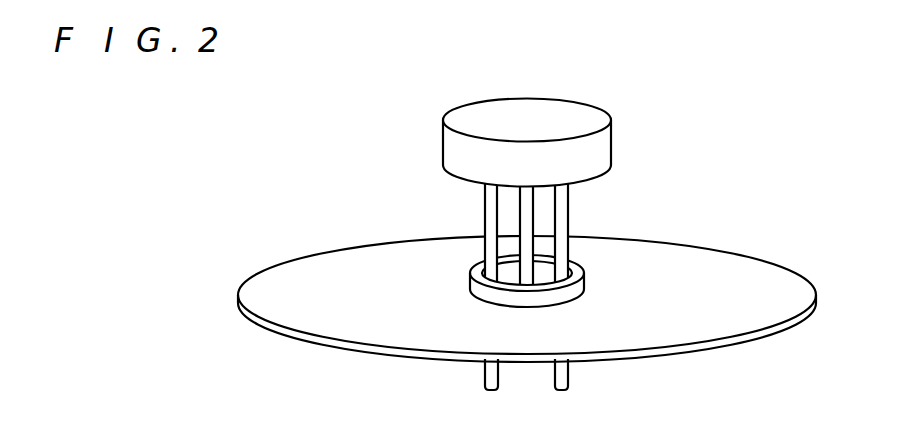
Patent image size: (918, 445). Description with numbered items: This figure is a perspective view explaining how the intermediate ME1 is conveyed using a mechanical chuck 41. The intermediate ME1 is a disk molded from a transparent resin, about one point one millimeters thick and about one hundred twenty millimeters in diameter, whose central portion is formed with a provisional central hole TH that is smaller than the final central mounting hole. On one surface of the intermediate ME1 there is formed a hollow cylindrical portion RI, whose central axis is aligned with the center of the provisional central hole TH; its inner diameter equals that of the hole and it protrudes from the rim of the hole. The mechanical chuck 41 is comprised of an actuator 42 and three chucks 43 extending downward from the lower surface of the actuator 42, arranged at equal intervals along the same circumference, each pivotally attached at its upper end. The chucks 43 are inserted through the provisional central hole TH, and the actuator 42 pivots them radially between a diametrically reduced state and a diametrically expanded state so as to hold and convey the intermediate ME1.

The mechanical chuck 41 is at (561, 130).
The actuator 42 is at (520, 109).
The chucks 43 is at (490, 211).
The provisional central hole TH is at (510, 277).
The hollow cylindrical portion RI is at (546, 245).
The intermediate ME1 is at (685, 256).